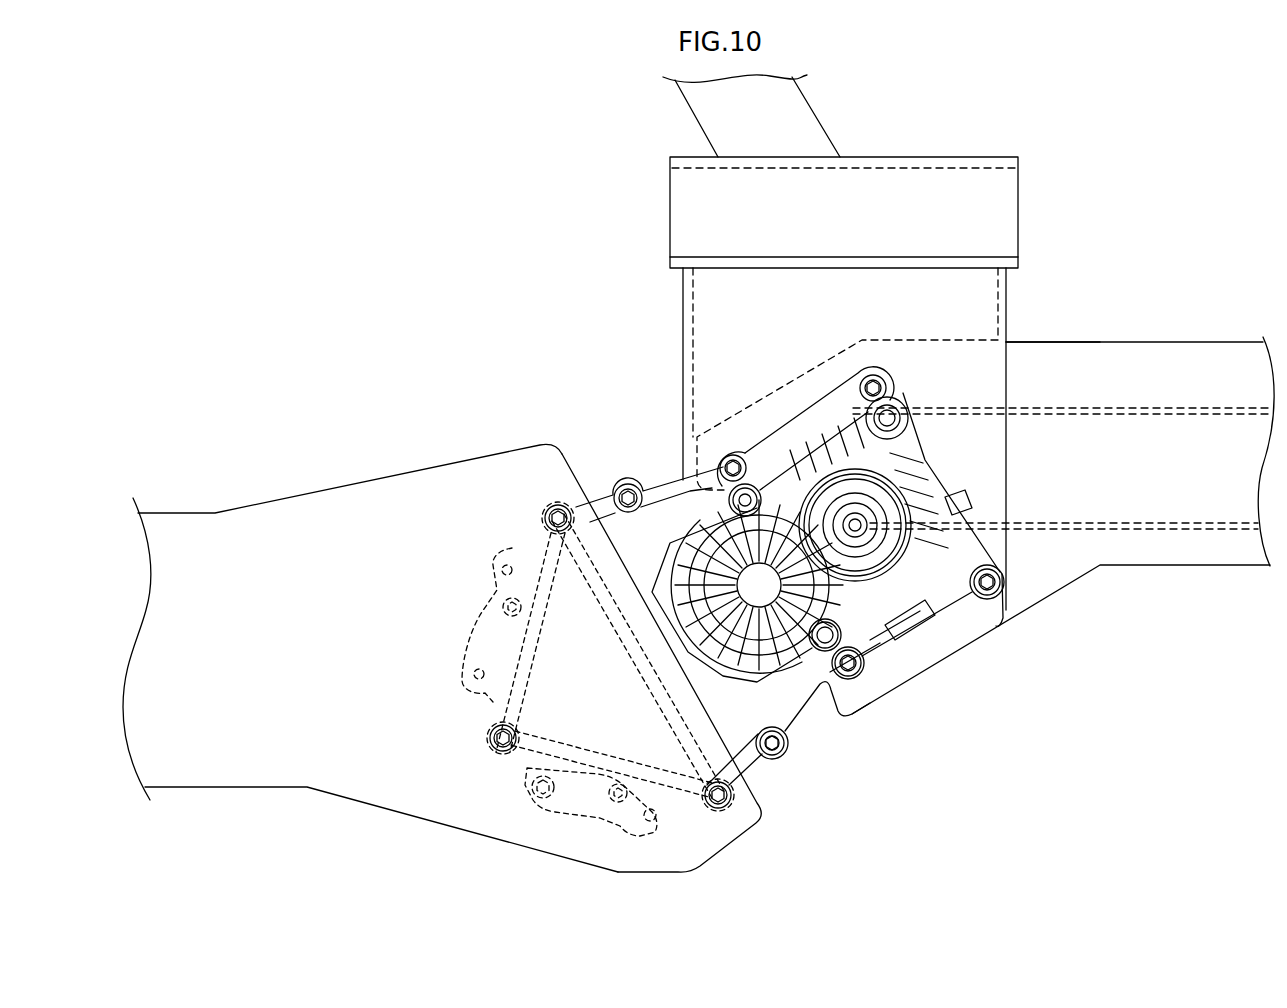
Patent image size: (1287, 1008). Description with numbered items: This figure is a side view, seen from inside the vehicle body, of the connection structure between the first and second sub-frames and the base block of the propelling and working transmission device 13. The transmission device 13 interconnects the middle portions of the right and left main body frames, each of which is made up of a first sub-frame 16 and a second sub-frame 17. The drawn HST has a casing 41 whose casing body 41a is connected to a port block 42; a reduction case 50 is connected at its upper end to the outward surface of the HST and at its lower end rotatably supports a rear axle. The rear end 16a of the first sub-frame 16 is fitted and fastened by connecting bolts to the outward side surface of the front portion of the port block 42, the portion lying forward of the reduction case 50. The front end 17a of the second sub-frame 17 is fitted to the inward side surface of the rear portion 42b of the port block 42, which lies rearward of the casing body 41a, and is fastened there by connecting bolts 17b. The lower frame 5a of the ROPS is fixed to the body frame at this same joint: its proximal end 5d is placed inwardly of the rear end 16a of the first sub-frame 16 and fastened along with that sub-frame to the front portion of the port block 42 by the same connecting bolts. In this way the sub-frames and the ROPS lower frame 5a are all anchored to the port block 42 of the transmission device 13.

The lower frame 5a is at (793, 123).
The proximal end 5d is at (985, 452).
The propelling and working transmission device 13 is at (611, 375).
The first sub-frame 16 is at (1163, 357).
The rear end 16a is at (780, 407).
The second sub-frame 17 is at (360, 495).
The front end 17a is at (550, 467).
The connecting bolt 17b is at (548, 513).
The casing 41 is at (827, 537).
The casing body 41a is at (807, 632).
The port block 42 is at (673, 510).
The rear portion of port block 42b is at (525, 765).
The reduction case 50 is at (472, 603).